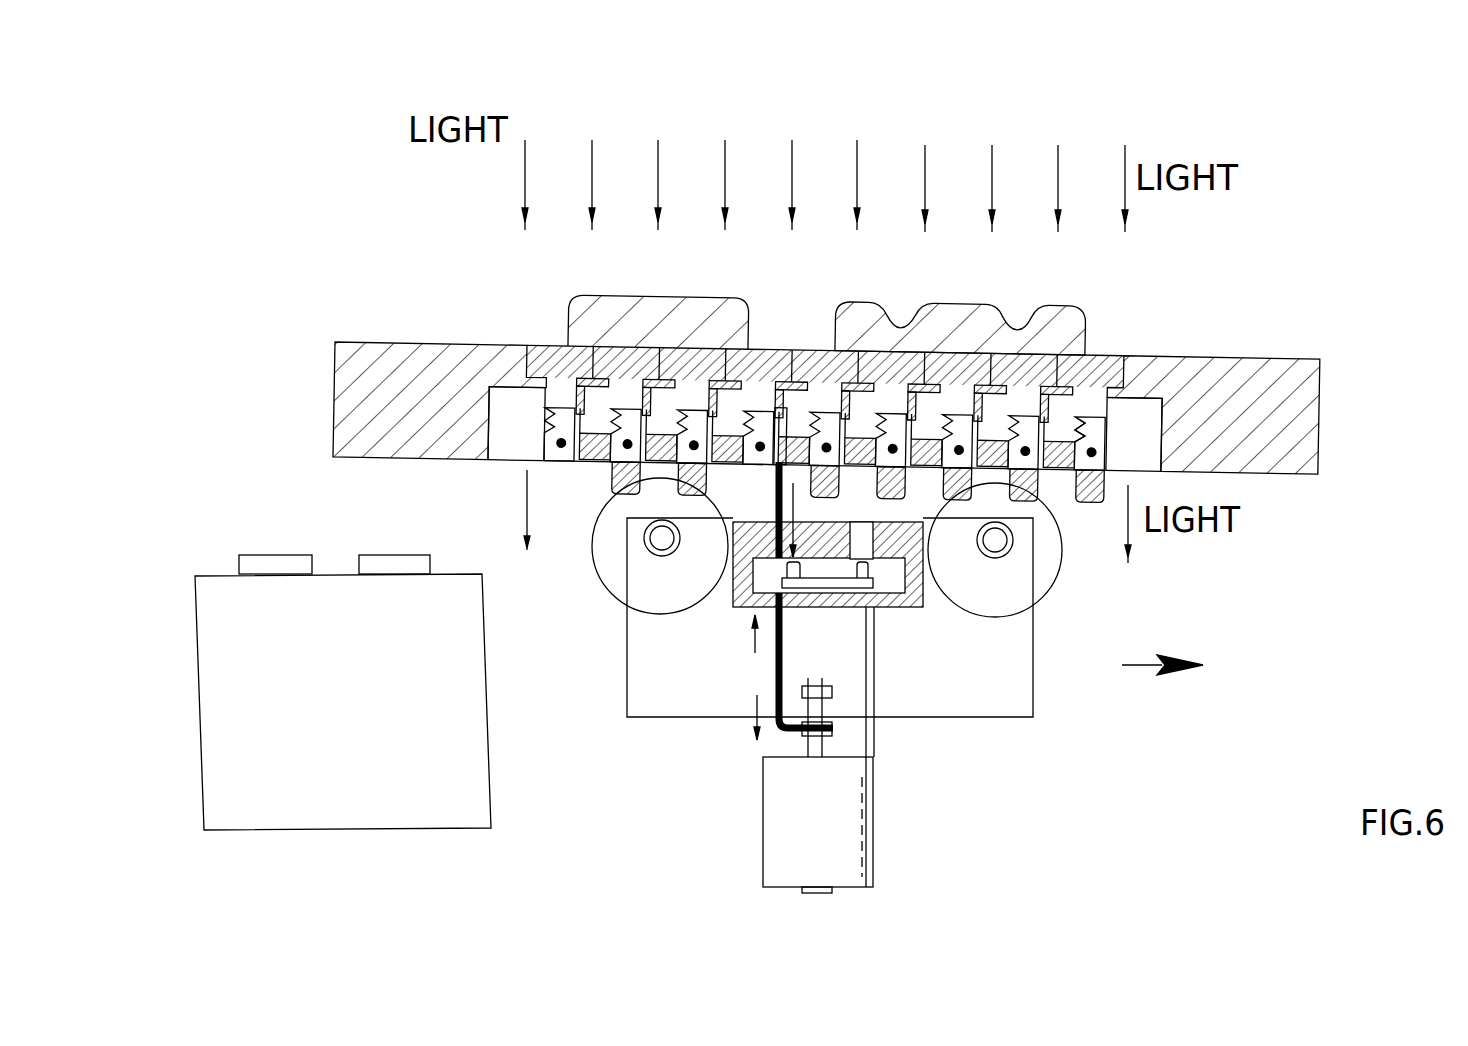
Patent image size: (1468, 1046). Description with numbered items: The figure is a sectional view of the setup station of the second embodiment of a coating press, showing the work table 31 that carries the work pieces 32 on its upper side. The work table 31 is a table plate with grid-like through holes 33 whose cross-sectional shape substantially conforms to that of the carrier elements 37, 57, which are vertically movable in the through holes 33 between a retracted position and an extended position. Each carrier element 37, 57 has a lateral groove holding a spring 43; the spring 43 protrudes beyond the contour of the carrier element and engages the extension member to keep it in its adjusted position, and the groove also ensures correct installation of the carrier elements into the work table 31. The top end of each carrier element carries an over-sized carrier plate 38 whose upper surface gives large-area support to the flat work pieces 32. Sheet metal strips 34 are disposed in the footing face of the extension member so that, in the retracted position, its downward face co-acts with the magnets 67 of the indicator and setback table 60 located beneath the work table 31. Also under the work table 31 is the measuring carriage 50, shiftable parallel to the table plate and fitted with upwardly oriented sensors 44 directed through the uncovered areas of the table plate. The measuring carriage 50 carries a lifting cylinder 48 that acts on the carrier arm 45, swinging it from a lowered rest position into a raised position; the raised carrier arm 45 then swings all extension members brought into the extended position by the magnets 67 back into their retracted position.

The work table 31 is at (1253, 390).
The work pieces 32 is at (955, 327).
The through holes 33 is at (1073, 385).
The sheet metal strips 34 is at (1090, 503).
The carrier element 37 is at (693, 398).
The carrier plate 38 is at (753, 387).
The spring 43 is at (1085, 410).
The sensors 44 is at (897, 610).
The carrier arm 45 is at (773, 653).
The lifting cylinder 48 is at (840, 857).
The measuring carriage 50 is at (655, 633).
The carrier element 57 is at (818, 400).
The indicator and setback table 60 is at (304, 721).
The magnets 67 is at (262, 555).